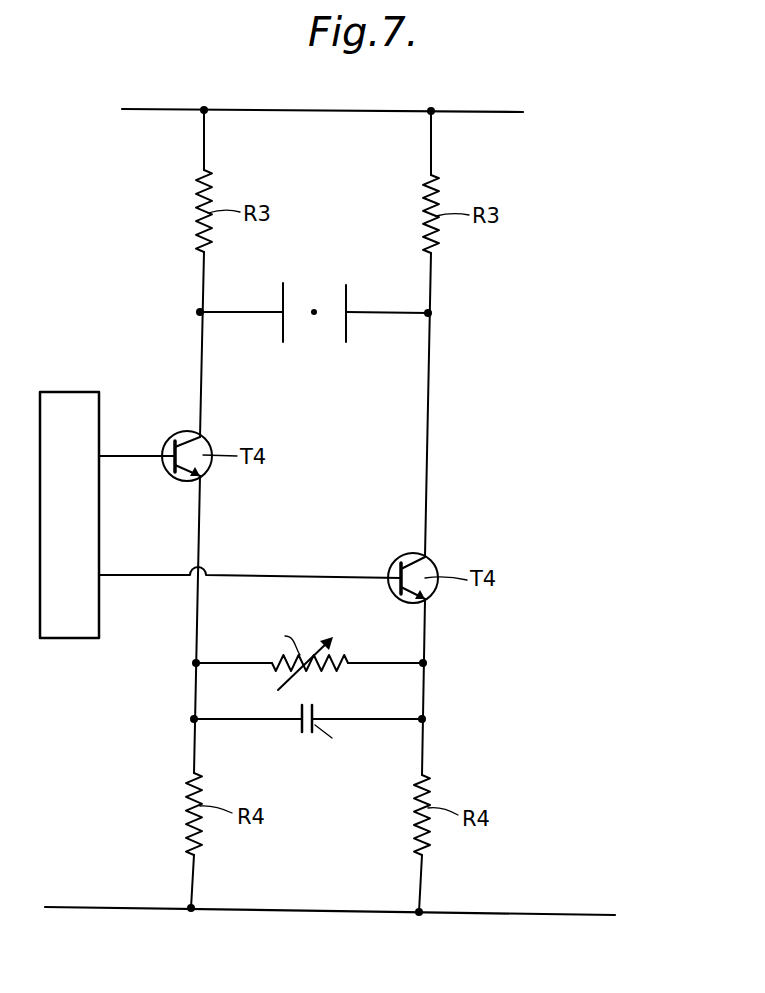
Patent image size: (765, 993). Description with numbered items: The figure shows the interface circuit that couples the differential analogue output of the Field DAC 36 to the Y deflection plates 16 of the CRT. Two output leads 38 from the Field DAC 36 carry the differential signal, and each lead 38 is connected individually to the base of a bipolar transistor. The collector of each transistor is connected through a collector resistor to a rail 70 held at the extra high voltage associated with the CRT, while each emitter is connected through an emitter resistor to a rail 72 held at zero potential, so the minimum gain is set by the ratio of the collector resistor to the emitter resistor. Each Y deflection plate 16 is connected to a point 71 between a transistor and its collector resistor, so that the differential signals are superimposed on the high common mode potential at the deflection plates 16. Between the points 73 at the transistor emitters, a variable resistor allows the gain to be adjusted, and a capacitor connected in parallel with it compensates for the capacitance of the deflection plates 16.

The rail 70 is at (147, 110).
The point 71 is at (197, 311).
The Y deflection plates 16 is at (283, 295).
The Field DAC 36 is at (68, 623).
The output leads 38 is at (143, 454).
The points 73 is at (193, 663).
The rail 72 is at (547, 914).